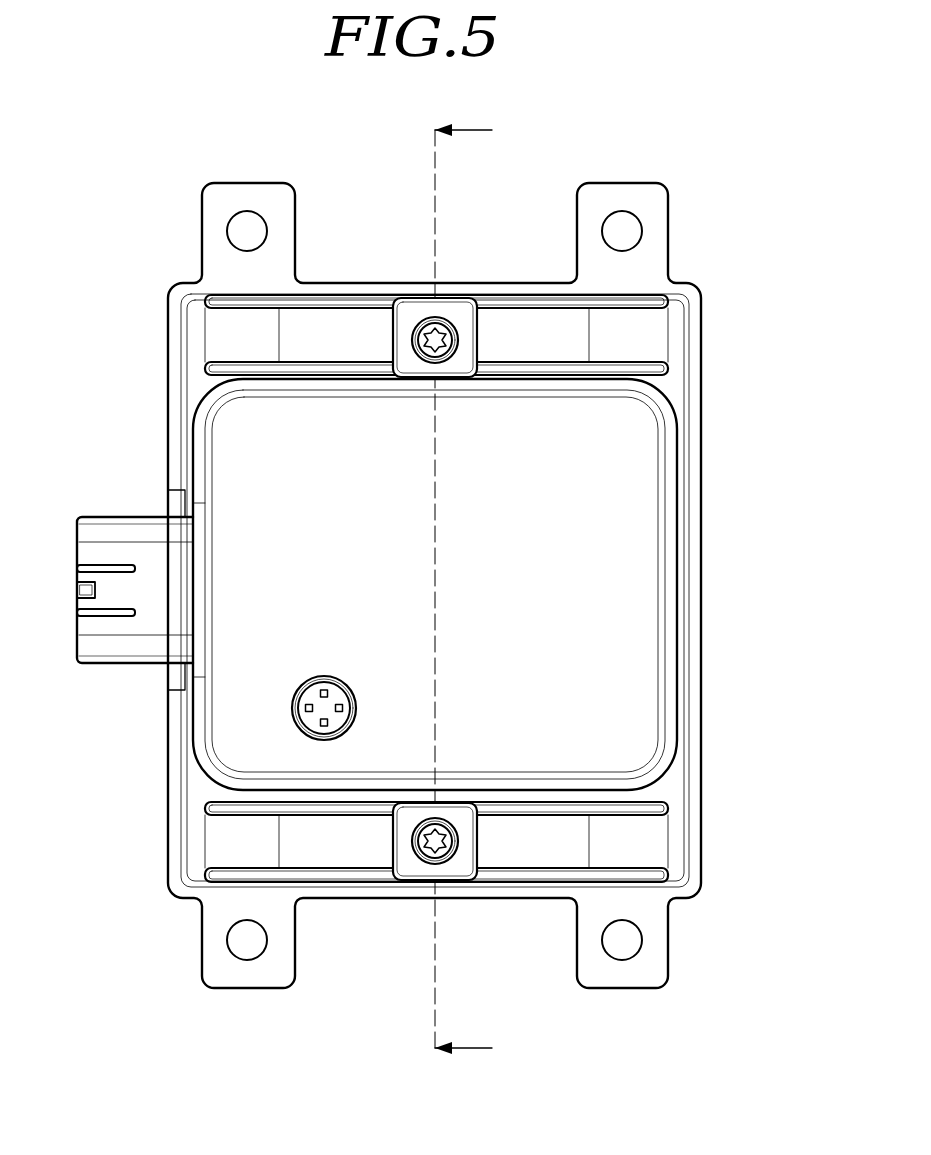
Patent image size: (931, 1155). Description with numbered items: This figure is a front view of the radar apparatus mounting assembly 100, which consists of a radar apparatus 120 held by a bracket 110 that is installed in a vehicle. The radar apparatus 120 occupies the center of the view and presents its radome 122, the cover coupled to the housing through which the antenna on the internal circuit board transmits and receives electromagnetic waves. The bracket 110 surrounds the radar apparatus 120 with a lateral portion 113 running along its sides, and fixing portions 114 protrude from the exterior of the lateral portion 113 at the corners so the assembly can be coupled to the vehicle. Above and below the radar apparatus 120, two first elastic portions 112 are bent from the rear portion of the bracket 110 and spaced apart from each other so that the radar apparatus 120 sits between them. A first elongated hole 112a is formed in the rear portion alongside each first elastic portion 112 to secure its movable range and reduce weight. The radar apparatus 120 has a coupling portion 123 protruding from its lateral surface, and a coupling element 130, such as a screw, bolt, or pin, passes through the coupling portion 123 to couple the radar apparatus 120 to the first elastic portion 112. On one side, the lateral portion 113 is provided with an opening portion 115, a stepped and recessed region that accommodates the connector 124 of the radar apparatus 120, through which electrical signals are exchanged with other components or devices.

The radar apparatus mounting assembly 100 is at (124, 115).
The bracket 110 is at (170, 281).
The first elastic portion 112 is at (334, 333).
The first elongated hole 112a is at (545, 300).
The lateral portion 113 is at (690, 600).
The fixing portion 114 is at (244, 193).
The opening portion 115 is at (178, 675).
The radar apparatus 120 is at (672, 383).
The radome 122 is at (612, 538).
The coupling portion 123 is at (455, 300).
The connector 124 is at (118, 531).
The coupling element 130 is at (423, 330).